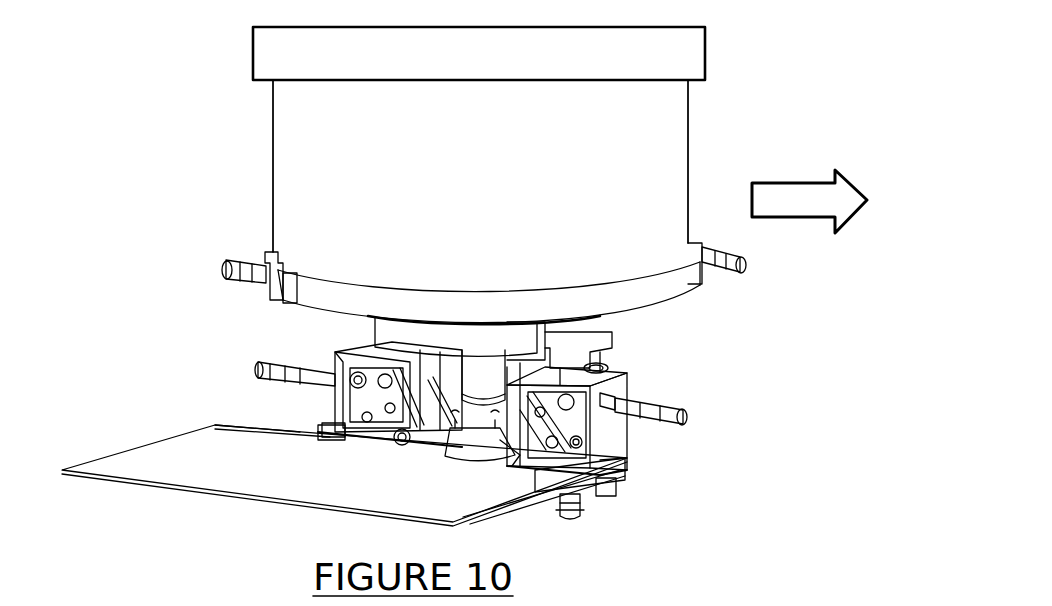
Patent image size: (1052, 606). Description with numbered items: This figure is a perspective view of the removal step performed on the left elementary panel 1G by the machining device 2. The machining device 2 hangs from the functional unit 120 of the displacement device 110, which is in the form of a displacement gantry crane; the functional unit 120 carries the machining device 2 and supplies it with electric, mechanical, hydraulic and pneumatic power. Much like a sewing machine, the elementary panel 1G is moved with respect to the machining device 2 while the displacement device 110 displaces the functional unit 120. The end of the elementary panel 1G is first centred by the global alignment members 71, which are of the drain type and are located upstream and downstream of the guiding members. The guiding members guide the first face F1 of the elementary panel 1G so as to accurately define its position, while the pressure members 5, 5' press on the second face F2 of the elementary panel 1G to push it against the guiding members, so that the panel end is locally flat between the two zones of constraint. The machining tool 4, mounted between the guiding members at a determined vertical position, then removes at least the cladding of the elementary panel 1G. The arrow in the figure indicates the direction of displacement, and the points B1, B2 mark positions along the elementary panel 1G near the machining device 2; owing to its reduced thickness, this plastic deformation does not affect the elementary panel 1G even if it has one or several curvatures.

The machining device 2 is at (188, 194).
The displacement device 110 is at (705, 60).
The functional unit 120 is at (688, 143).
The machining tool 4 is at (478, 368).
The pressure member 5 is at (358, 325).
The second clamping module 5' is at (627, 417).
The global alignment member 71 is at (328, 433).
The elementary panel 1G is at (218, 497).
The first bearing point B1 is at (612, 482).
The second bearing point B2 is at (240, 424).
The first face F1 is at (143, 500).
The second face F2 is at (147, 462).